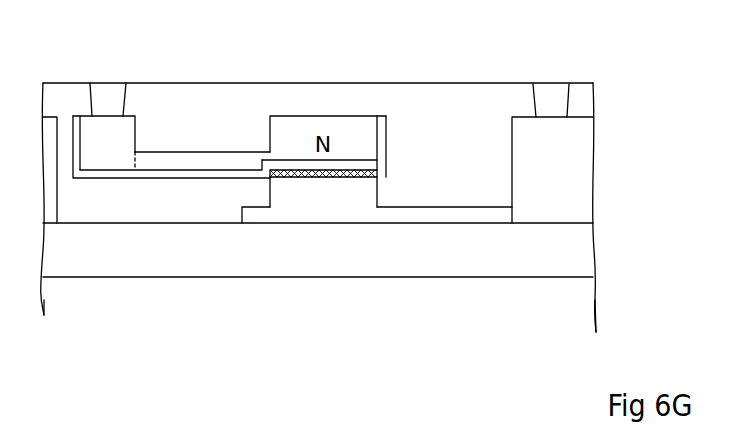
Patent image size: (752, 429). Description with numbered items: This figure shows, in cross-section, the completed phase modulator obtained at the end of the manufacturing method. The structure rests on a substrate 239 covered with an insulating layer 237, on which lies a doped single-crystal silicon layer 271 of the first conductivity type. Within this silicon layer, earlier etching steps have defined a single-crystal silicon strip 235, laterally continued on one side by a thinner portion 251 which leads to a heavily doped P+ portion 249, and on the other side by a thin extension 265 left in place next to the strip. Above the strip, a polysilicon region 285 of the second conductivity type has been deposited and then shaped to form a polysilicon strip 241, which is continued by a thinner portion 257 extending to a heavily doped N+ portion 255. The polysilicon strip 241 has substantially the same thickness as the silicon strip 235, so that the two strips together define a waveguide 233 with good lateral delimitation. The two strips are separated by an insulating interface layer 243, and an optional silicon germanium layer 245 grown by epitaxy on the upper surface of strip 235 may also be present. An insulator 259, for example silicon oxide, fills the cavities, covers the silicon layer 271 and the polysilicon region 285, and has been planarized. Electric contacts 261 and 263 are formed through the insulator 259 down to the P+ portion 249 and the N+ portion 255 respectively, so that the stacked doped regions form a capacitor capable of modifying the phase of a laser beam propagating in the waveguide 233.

The waveguide 233 is at (293, 322).
The single-crystal silicon strip 235 is at (358, 207).
The insulating layer 237 is at (575, 255).
The substrate 239 is at (577, 305).
The polysilicon strip 241 is at (303, 147).
The insulating interface layer 243 is at (337, 163).
The silicon germanium layer 245 is at (368, 170).
The heavily doped P+ portion 249 is at (552, 213).
The thinner silicon portion 251 is at (472, 217).
The heavily doped N+ portion 255 is at (130, 123).
The thinner polysilicon portion 257 is at (228, 160).
The insulator 259 is at (158, 211).
The electric contact 261 is at (550, 98).
The electric contact 263 is at (108, 98).
The extension 265 is at (252, 215).
The doped single-crystal silicon layer 271 is at (597, 172).
The polysilicon region 285 is at (178, 145).